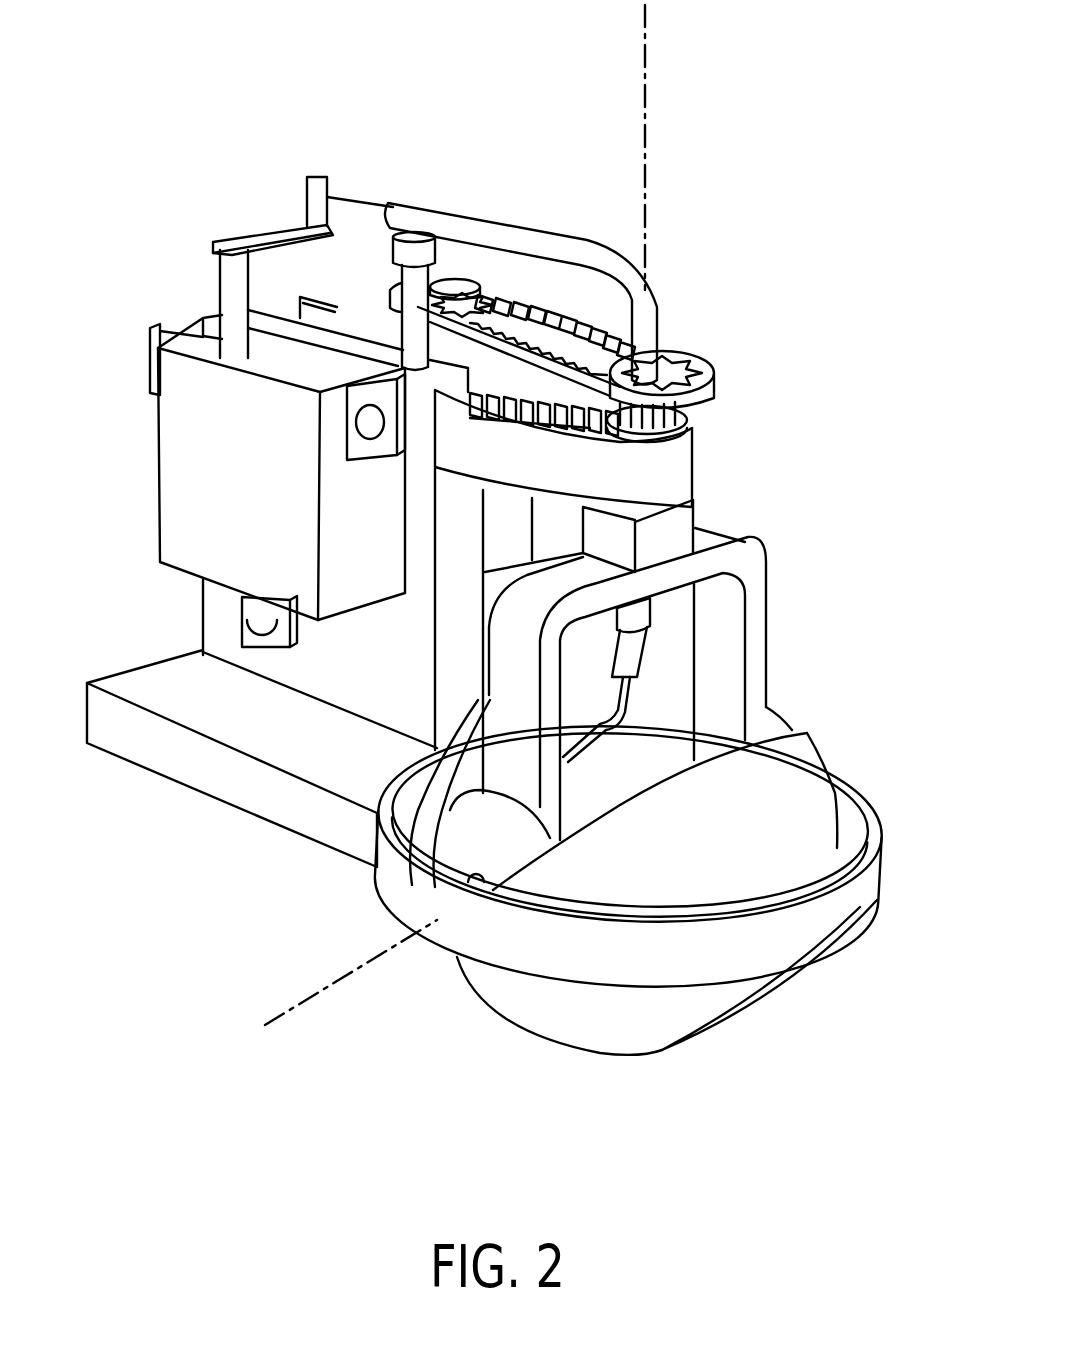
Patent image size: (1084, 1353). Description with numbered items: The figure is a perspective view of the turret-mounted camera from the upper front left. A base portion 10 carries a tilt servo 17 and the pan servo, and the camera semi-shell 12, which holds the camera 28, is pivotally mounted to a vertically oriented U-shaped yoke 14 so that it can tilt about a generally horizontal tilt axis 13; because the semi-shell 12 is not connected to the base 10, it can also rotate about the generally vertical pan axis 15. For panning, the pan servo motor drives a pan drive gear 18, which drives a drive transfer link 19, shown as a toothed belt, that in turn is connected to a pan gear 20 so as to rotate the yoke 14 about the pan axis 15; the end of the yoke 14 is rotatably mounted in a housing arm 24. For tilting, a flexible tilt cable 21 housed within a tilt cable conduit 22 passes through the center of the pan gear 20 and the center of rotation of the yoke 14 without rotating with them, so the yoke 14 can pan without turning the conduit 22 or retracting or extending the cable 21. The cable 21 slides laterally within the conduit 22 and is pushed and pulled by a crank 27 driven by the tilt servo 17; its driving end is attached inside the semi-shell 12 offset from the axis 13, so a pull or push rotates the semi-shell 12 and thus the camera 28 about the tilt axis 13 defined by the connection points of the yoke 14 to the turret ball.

The base portion 10 is at (212, 802).
The camera semi-shell 12 is at (543, 1038).
The tilt axis 13 is at (312, 1008).
The yoke 14 is at (747, 563).
The pan axis 15 is at (648, 62).
The tilt servo 17 is at (177, 475).
The pan drive gear 18 is at (450, 285).
The drive transfer link 19 is at (553, 300).
The pan gear 20 is at (673, 370).
The tilt cable 21 is at (350, 198).
The tilt cable conduit 22 is at (513, 238).
The housing arm 24 is at (677, 478).
The crank 27 is at (262, 230).
The camera 28 is at (723, 1027).